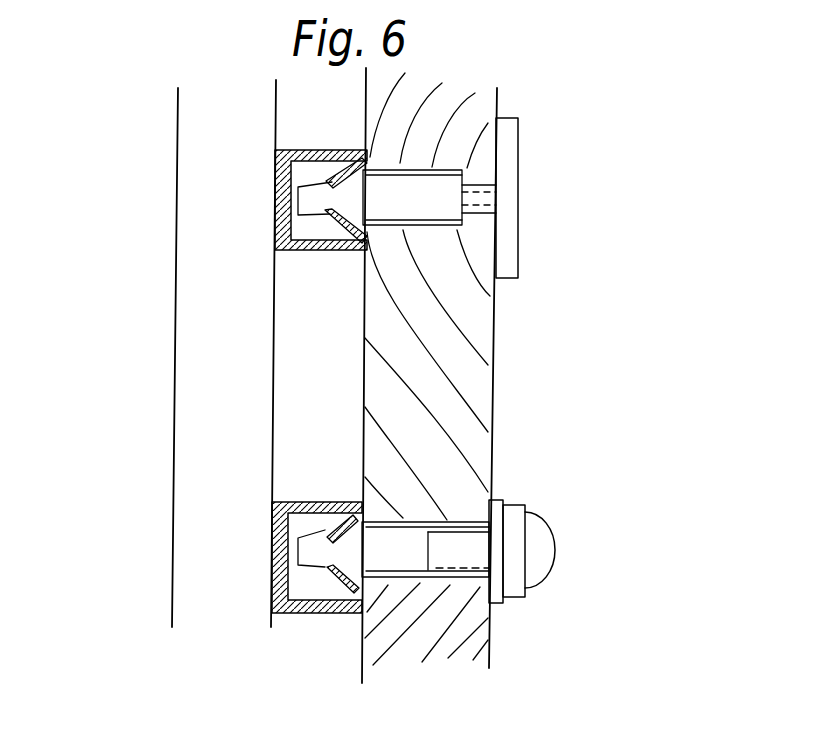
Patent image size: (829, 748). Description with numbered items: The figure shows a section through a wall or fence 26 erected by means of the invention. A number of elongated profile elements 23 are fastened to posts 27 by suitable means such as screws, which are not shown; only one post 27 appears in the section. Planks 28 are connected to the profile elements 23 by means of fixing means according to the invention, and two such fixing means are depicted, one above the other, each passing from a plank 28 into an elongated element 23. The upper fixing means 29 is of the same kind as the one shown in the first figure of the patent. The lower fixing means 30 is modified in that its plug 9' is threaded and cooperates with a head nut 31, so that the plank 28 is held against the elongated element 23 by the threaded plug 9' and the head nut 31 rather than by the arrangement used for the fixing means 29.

The elongated element 23 is at (294, 250).
The fence 26 is at (507, 333).
The post 27 is at (198, 385).
The plank 28 is at (470, 110).
The fixing means 29 is at (519, 187).
The plug 9' is at (466, 510).
The fixing means 30 is at (544, 511).
The head nut 31 is at (522, 548).